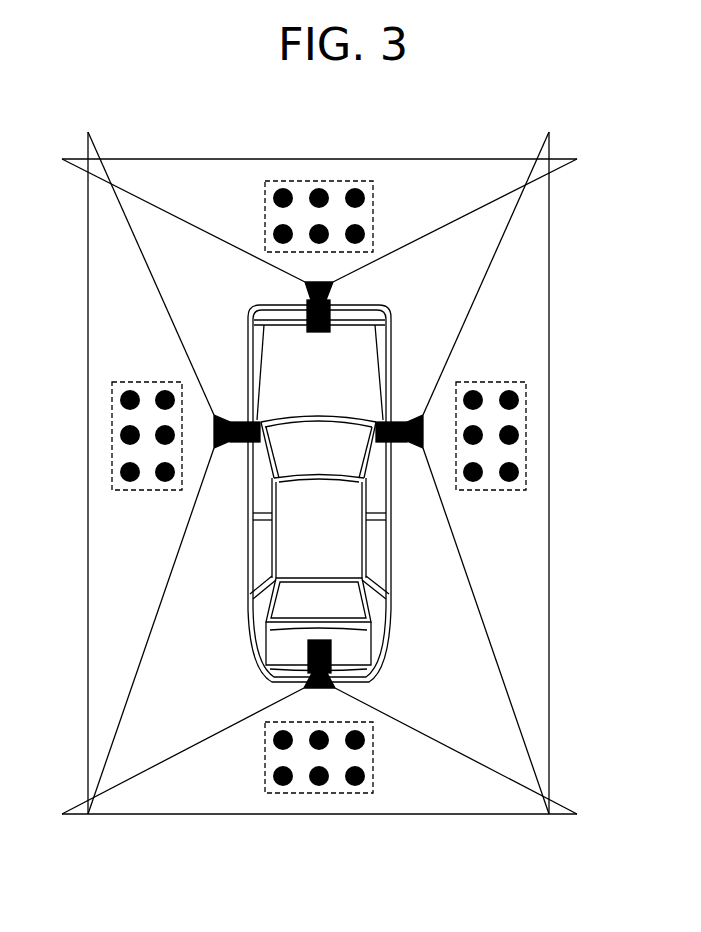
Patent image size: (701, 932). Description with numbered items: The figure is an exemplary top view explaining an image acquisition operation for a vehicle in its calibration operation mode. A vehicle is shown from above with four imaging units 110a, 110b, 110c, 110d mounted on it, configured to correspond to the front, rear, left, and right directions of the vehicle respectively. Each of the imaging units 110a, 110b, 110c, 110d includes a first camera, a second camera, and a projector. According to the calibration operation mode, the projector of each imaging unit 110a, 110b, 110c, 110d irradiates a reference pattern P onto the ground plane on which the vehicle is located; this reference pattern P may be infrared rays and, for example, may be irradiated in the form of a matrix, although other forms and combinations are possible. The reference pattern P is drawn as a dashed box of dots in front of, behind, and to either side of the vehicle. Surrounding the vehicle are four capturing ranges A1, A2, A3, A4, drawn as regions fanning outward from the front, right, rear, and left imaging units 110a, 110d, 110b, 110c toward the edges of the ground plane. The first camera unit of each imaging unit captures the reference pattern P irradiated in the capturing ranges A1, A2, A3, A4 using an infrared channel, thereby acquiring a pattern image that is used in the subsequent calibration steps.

The imaging unit 110a is at (330, 304).
The imaging unit 110b is at (331, 655).
The imaging unit 110c is at (240, 453).
The imaging unit 110d is at (417, 450).
The reference pattern P is at (327, 840).
The capturing range A1 is at (423, 163).
The capturing range A2 is at (543, 305).
The capturing range A3 is at (433, 807).
The capturing range A4 is at (97, 577).